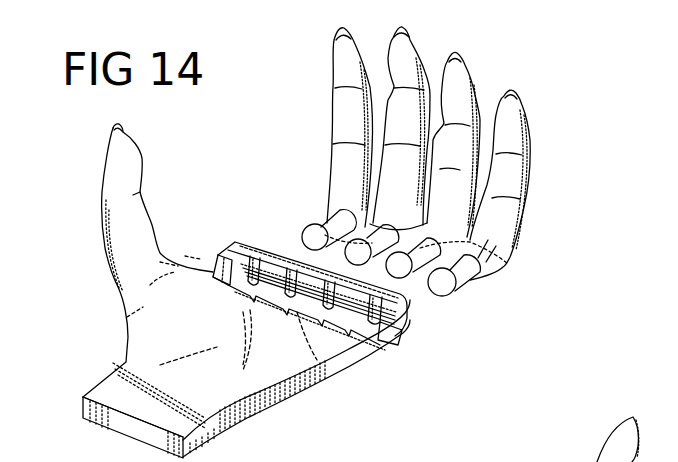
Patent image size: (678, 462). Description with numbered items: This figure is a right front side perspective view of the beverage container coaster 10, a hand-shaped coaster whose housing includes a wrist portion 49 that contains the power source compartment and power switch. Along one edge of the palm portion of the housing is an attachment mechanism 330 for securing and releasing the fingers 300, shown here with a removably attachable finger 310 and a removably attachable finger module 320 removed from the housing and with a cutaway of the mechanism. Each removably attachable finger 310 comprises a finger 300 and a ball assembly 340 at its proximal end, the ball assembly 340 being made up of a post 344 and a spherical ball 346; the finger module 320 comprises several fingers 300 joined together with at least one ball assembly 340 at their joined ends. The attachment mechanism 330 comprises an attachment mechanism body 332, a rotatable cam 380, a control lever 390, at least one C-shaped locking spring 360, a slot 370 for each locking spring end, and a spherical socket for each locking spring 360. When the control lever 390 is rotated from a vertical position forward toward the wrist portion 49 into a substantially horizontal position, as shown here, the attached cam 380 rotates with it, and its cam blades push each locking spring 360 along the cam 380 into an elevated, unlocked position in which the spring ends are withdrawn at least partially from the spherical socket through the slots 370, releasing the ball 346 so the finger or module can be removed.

The beverage container coaster 10 is at (85, 329).
The wrist portion 49 is at (148, 410).
The finger 300 is at (334, 63).
The removably attachable finger 310 is at (325, 157).
The finger module 320 is at (525, 243).
The attachment mechanism 330 is at (222, 276).
The attachment mechanism body 332 is at (275, 262).
The ball assembly 340 is at (473, 287).
The post 344 is at (333, 223).
The spherical ball 346 is at (312, 235).
The C-shaped locking spring 360 is at (242, 267).
The slot 370 is at (388, 302).
The rotatable cam 380 is at (347, 312).
The control lever 390 is at (377, 347).